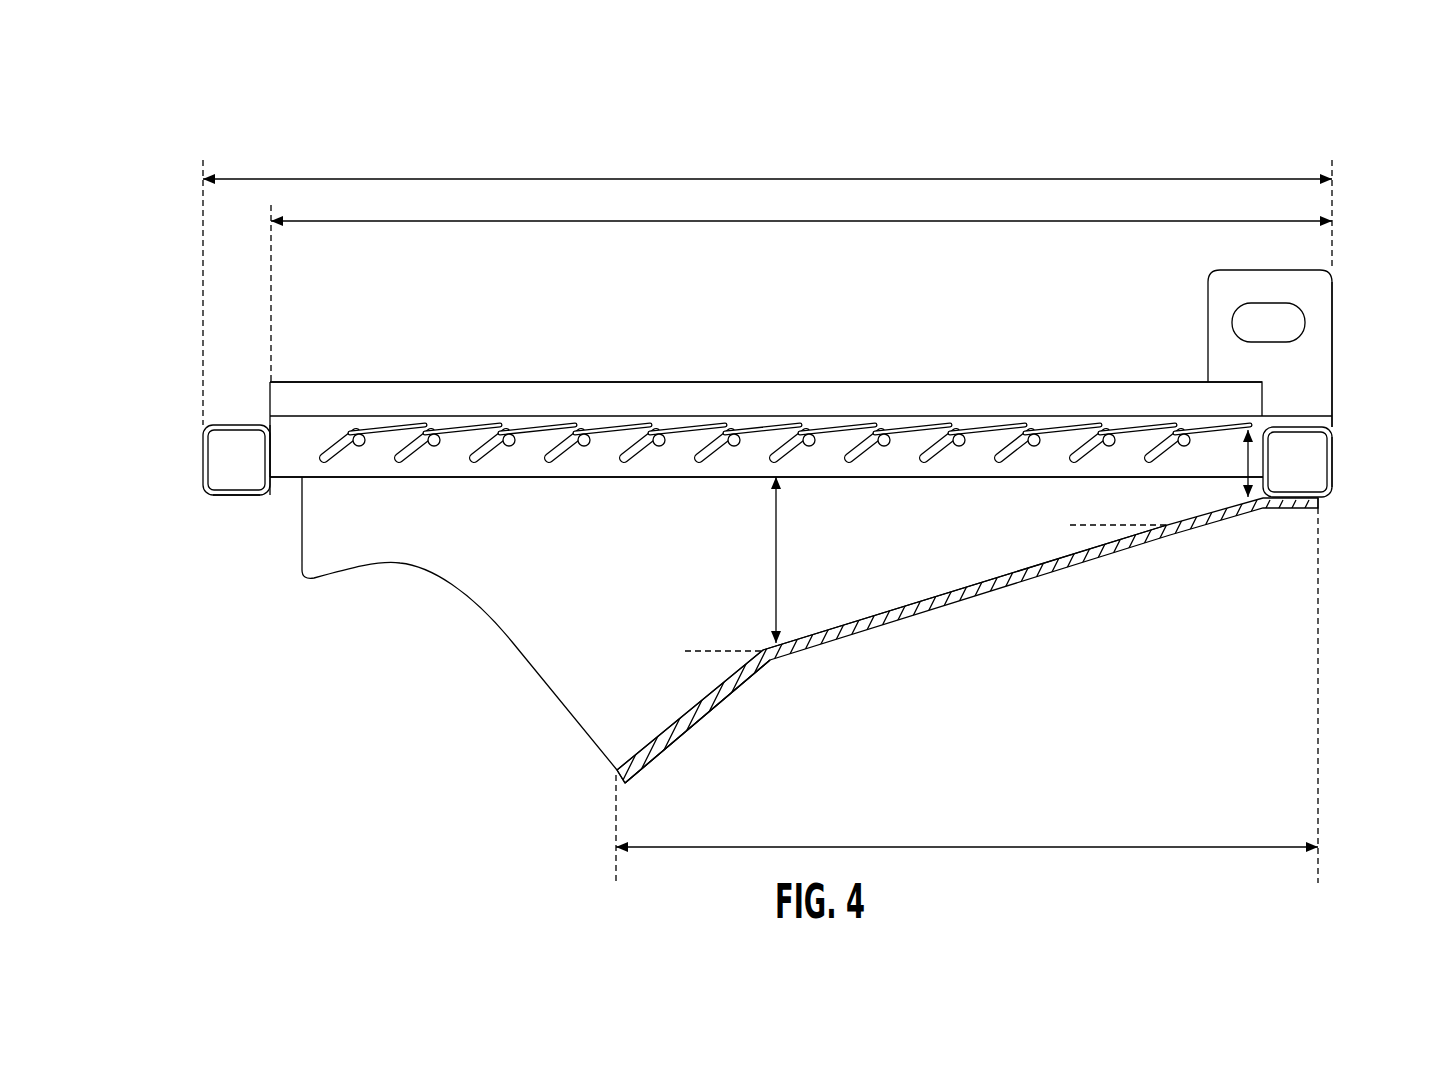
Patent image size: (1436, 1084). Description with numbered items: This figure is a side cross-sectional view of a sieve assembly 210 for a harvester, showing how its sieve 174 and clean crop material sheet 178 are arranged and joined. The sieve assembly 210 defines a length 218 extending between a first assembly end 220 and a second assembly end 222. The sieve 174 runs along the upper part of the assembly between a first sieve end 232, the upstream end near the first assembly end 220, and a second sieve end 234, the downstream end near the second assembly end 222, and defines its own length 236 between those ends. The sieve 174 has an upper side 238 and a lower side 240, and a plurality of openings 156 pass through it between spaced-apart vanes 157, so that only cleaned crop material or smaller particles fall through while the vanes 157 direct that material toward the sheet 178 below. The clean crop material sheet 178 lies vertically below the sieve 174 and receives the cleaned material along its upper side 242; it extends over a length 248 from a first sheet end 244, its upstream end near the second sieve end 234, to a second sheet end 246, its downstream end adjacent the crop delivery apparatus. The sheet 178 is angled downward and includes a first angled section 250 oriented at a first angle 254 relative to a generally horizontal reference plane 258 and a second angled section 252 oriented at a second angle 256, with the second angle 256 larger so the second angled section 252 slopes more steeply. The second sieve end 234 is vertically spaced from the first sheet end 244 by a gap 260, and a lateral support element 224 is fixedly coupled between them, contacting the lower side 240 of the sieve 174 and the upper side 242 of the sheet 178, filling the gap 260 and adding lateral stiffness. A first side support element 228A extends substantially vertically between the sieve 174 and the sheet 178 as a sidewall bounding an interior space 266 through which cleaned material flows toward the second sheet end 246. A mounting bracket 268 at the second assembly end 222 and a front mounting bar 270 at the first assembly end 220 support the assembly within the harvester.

The sieve assembly 210 is at (801, 316).
The length 218 is at (640, 179).
The length 236 is at (703, 221).
The mounting brackets 268 is at (1232, 292).
The upper side 238 is at (616, 416).
The vanes 157 is at (830, 427).
The sieve 174 is at (913, 406).
The openings 156 is at (1113, 427).
The first sieve end 232 is at (268, 420).
The first assembly end 220 is at (203, 445).
The second sieve end 234 is at (1335, 416).
The second assembly end 222 is at (1335, 462).
The lateral support element 224 is at (1340, 478).
The gap 260 is at (1246, 470).
The reference plane 258 is at (735, 651).
The first angle 254 is at (1104, 540).
The front mounting bar 270 is at (243, 498).
The lower side 240 is at (563, 478).
The first side support element 228A is at (453, 552).
The interior space 266 is at (775, 562).
The second angle 256 is at (720, 683).
The first angled section 250 is at (1073, 566).
The upper side 242 is at (677, 721).
The first sheet end 244 is at (1335, 508).
The second angled section 252 is at (690, 729).
The clean crop material sheet 178 is at (730, 700).
The second sheet end 246 is at (625, 786).
The length 248 is at (943, 847).